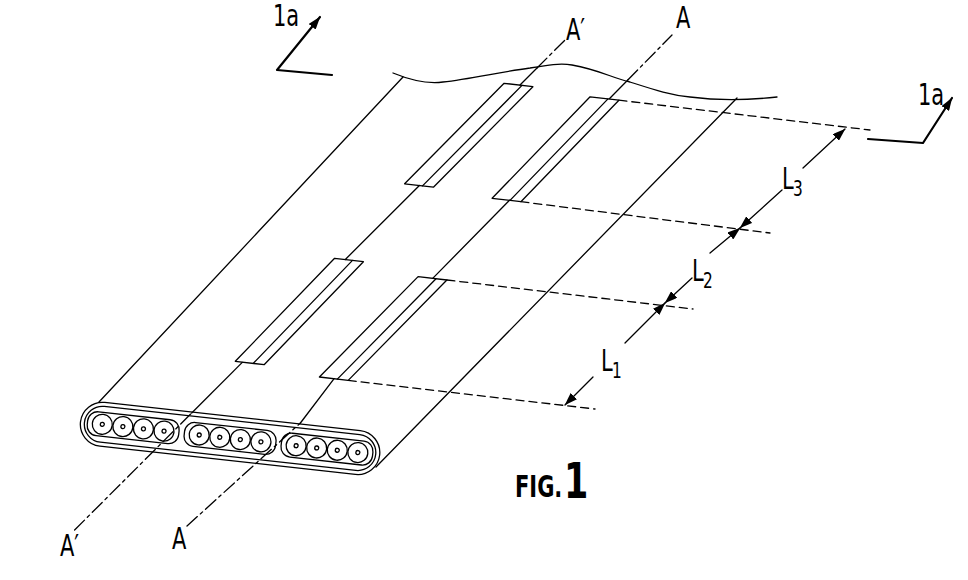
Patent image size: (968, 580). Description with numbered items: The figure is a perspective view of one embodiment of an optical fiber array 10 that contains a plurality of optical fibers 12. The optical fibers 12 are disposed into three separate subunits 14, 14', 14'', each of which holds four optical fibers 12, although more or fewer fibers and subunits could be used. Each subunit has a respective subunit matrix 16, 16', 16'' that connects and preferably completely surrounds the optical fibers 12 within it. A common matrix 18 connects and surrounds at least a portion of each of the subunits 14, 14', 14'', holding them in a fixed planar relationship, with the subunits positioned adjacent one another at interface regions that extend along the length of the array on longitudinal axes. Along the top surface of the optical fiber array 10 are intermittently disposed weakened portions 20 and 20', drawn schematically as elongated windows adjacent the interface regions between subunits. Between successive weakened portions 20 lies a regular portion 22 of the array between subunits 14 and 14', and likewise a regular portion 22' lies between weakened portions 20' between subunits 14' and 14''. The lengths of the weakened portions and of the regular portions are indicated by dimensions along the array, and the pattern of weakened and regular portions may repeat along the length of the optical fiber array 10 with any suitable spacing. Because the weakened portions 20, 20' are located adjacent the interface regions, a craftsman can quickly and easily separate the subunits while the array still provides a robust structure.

The optical fiber array 10 is at (233, 291).
The optical fibers 12 is at (220, 440).
The subunit 14 is at (229, 479).
The subunit 14' is at (555, 304).
The subunit 14'' is at (209, 249).
The subunit matrix 16 is at (204, 480).
The subunit matrix 16' is at (331, 503).
The subunit matrix 16'' is at (116, 455).
The common matrix 18 is at (220, 400).
The weakened portion 20 is at (383, 329).
The weakened portion 20' is at (291, 223).
The regular portion 22 is at (463, 251).
The regular portion 22' is at (343, 240).